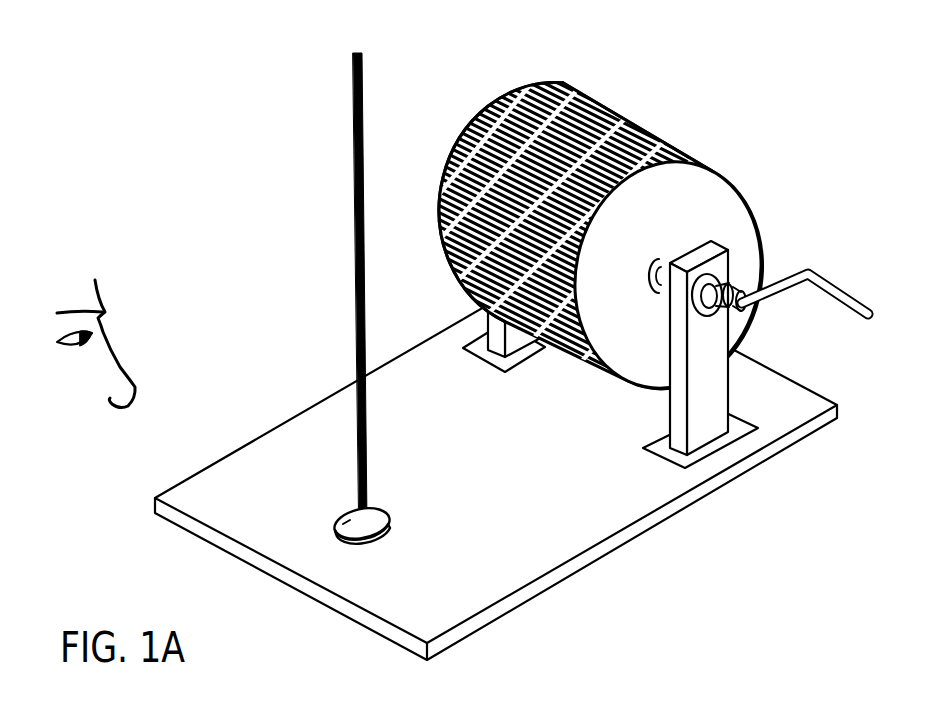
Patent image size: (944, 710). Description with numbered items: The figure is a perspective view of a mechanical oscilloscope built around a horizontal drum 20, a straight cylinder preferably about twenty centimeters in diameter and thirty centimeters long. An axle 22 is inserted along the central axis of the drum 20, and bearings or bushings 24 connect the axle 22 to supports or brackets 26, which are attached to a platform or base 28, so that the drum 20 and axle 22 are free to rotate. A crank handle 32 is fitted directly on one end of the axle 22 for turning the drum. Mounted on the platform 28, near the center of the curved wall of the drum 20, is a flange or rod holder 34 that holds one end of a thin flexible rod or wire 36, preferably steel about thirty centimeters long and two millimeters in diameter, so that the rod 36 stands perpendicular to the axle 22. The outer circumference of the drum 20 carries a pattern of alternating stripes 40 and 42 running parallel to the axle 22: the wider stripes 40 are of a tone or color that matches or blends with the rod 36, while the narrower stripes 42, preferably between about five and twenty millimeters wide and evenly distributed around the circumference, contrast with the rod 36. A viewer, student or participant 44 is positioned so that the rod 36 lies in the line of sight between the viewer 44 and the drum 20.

The drum 20 is at (637, 235).
The axle 22 is at (737, 282).
The bearings or bushings 24 is at (728, 323).
The supports or brackets 26 is at (510, 337).
The platform or base 28 is at (570, 508).
The crank handle 32 is at (773, 303).
The flange or rod holder 34 is at (350, 522).
The thin rod or wire 36 is at (355, 182).
The stripes 40 is at (622, 150).
The stripes 42 is at (460, 245).
The viewer, student or participant 44 is at (60, 410).